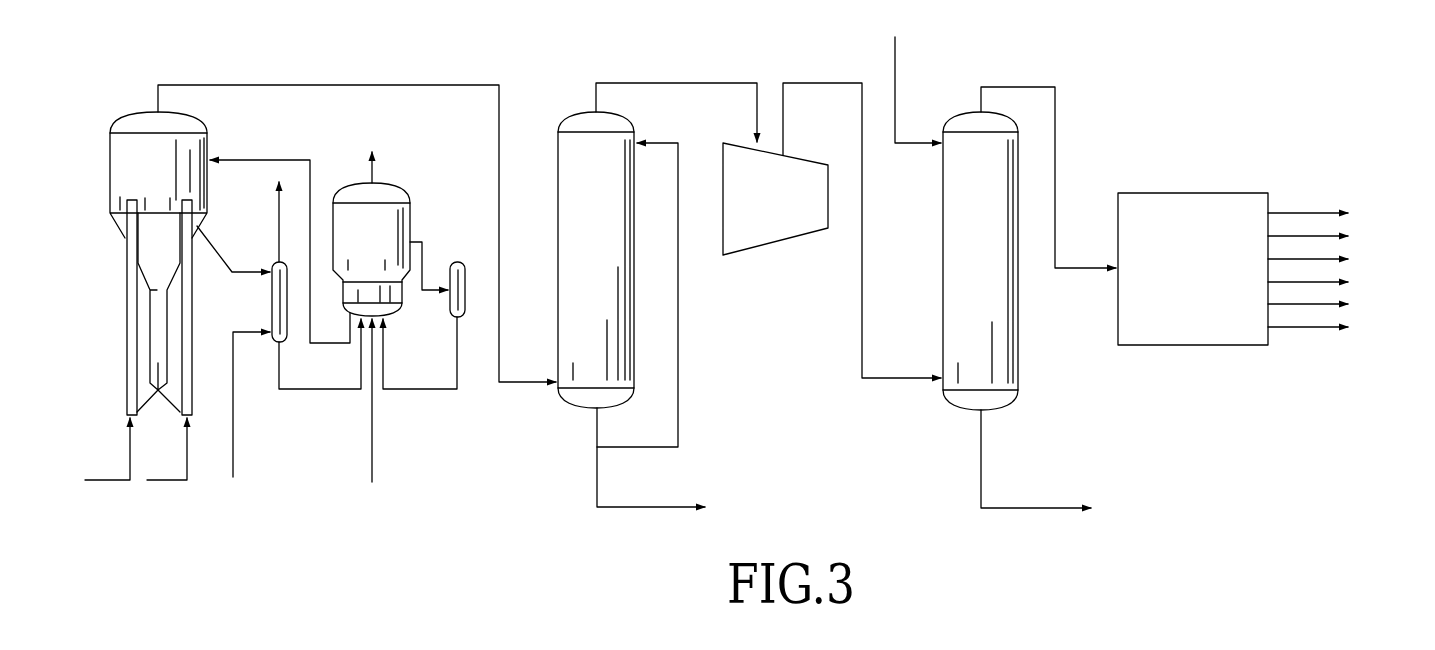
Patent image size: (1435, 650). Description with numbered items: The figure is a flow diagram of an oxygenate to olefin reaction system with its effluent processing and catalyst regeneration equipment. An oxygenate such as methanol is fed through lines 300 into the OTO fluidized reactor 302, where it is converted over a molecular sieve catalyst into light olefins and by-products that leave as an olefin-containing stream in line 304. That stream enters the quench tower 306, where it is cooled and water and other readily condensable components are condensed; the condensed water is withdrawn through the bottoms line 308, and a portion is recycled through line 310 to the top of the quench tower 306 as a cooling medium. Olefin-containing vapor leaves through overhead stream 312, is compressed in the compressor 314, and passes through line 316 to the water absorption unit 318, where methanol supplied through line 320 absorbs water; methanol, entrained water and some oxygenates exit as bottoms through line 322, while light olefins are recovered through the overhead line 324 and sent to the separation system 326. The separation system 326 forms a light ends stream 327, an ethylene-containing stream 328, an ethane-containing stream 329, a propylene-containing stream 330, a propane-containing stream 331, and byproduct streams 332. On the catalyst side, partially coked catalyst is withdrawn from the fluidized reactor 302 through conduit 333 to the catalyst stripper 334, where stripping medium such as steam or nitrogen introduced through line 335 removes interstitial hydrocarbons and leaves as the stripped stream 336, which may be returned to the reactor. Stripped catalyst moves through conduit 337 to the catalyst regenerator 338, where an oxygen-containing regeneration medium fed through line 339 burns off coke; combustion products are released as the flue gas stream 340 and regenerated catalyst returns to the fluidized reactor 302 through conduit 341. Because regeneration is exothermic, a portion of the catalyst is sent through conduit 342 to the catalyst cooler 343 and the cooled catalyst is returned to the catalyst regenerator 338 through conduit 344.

The lines 300 is at (110, 481).
The OTO fluidized reactor 302 is at (145, 179).
The line 304 is at (497, 150).
The quench tower 306 is at (583, 252).
The bottoms line 308 is at (597, 476).
The line 310 is at (678, 382).
The overhead stream 312 is at (673, 83).
The compressor 314 is at (752, 210).
The line 316 is at (862, 310).
The water absorption unit 318 is at (967, 252).
The line 320 is at (895, 85).
The line 322 is at (981, 477).
The overhead line 324 is at (1045, 87).
The separation system 326 is at (1180, 284).
The light ends stream 327 is at (1330, 213).
The ethylene-containing stream 328 is at (1327, 236).
The ethane-containing stream 329 is at (1327, 259).
The propylene-containing stream 330 is at (1327, 282).
The propane-containing stream 331 is at (1327, 304).
The byproduct streams 332 is at (1327, 327).
The conduit 333 is at (222, 254).
The catalyst stripper 334 is at (270, 293).
The line 335 is at (233, 460).
The stripped stream 336 is at (278, 220).
The conduit 337 is at (310, 390).
The catalyst regenerator 338 is at (359, 251).
The line 339 is at (372, 450).
The flue gas stream 340 is at (370, 178).
The conduit 341 is at (284, 159).
The conduit 342 is at (433, 300).
The catalyst cooler 343 is at (447, 275).
The conduit 344 is at (418, 392).